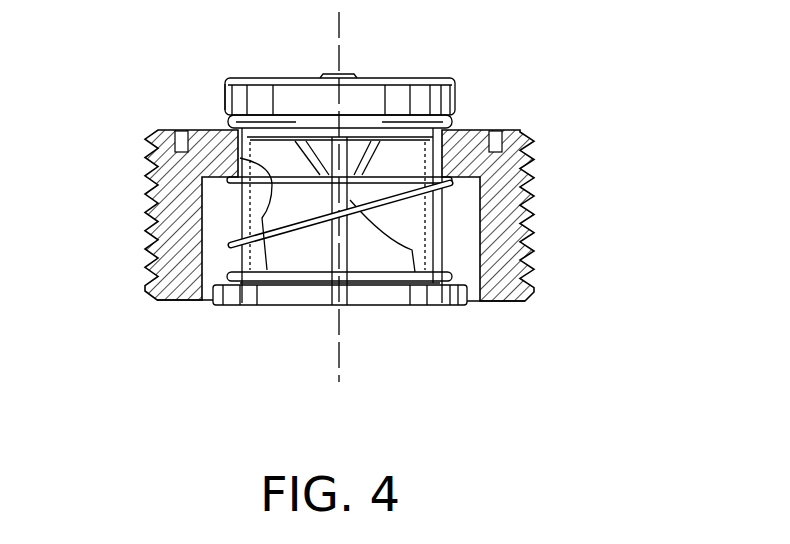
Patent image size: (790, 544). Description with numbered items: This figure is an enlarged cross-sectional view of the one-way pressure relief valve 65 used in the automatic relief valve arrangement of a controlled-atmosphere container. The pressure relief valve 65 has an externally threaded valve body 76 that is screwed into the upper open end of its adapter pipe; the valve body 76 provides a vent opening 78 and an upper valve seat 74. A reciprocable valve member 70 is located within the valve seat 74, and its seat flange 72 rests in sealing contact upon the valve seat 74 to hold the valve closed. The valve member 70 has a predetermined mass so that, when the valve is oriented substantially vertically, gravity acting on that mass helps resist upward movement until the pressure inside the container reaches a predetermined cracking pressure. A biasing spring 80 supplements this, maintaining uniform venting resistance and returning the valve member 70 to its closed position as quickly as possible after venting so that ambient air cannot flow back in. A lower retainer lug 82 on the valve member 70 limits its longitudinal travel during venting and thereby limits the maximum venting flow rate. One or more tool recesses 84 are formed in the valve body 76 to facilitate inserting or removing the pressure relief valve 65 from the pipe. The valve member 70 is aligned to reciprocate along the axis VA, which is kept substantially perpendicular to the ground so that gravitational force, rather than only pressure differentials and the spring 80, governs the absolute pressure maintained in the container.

The pressure relief valve 65 is at (548, 123).
The valve member 70 is at (275, 112).
The seat flange 72 is at (226, 92).
The valve seat 74 is at (448, 125).
The valve body 76 is at (533, 167).
The vent opening 78 is at (248, 214).
The spring 80 is at (400, 205).
The retainer lug 82 is at (418, 303).
The tool recess 84 is at (182, 131).
The axis VA is at (344, 27).